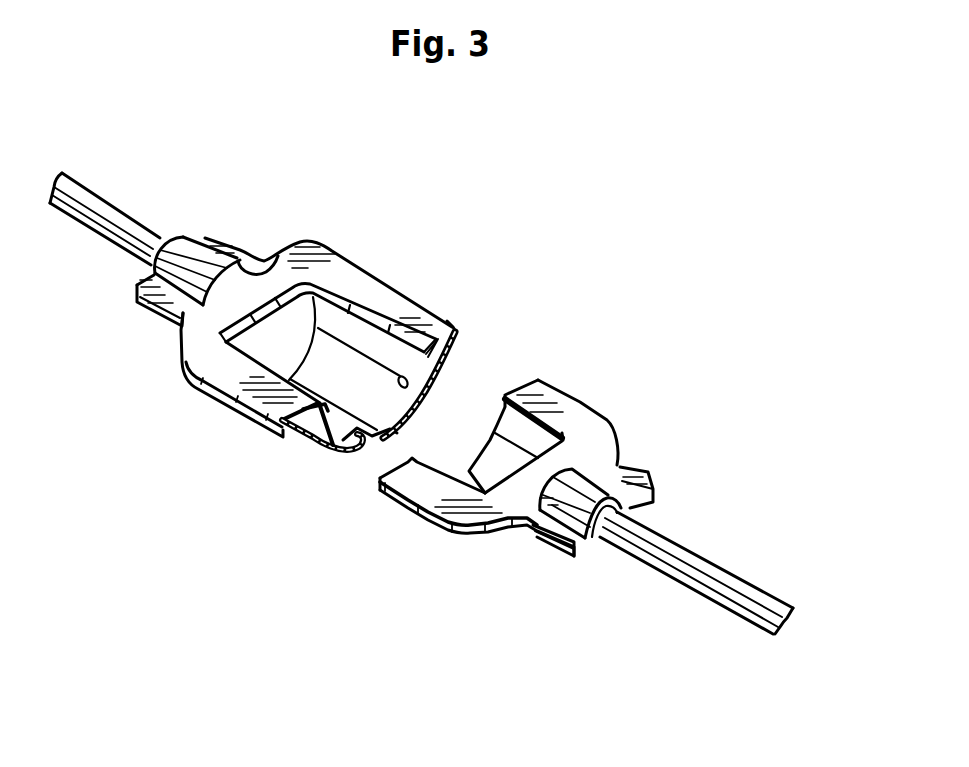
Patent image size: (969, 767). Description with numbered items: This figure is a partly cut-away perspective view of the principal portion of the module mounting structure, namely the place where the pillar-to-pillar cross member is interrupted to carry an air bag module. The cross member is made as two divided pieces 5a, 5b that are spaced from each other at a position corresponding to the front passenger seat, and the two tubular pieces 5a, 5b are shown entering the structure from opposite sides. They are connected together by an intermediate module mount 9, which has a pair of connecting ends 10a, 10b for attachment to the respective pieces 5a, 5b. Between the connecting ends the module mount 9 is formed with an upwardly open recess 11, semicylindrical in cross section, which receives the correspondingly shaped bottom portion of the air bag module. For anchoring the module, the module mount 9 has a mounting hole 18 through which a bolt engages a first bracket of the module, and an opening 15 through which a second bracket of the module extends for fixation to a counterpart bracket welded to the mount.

The divided piece of cross member 5a is at (712, 558).
The divided piece of cross member 5b is at (118, 204).
The intermediate module mount 9 is at (436, 524).
The connecting end 10a is at (606, 481).
The connecting end 10b is at (190, 258).
The upwardly open recess 11 is at (432, 392).
The opening 15 is at (370, 445).
The mounting hole 18 is at (447, 352).